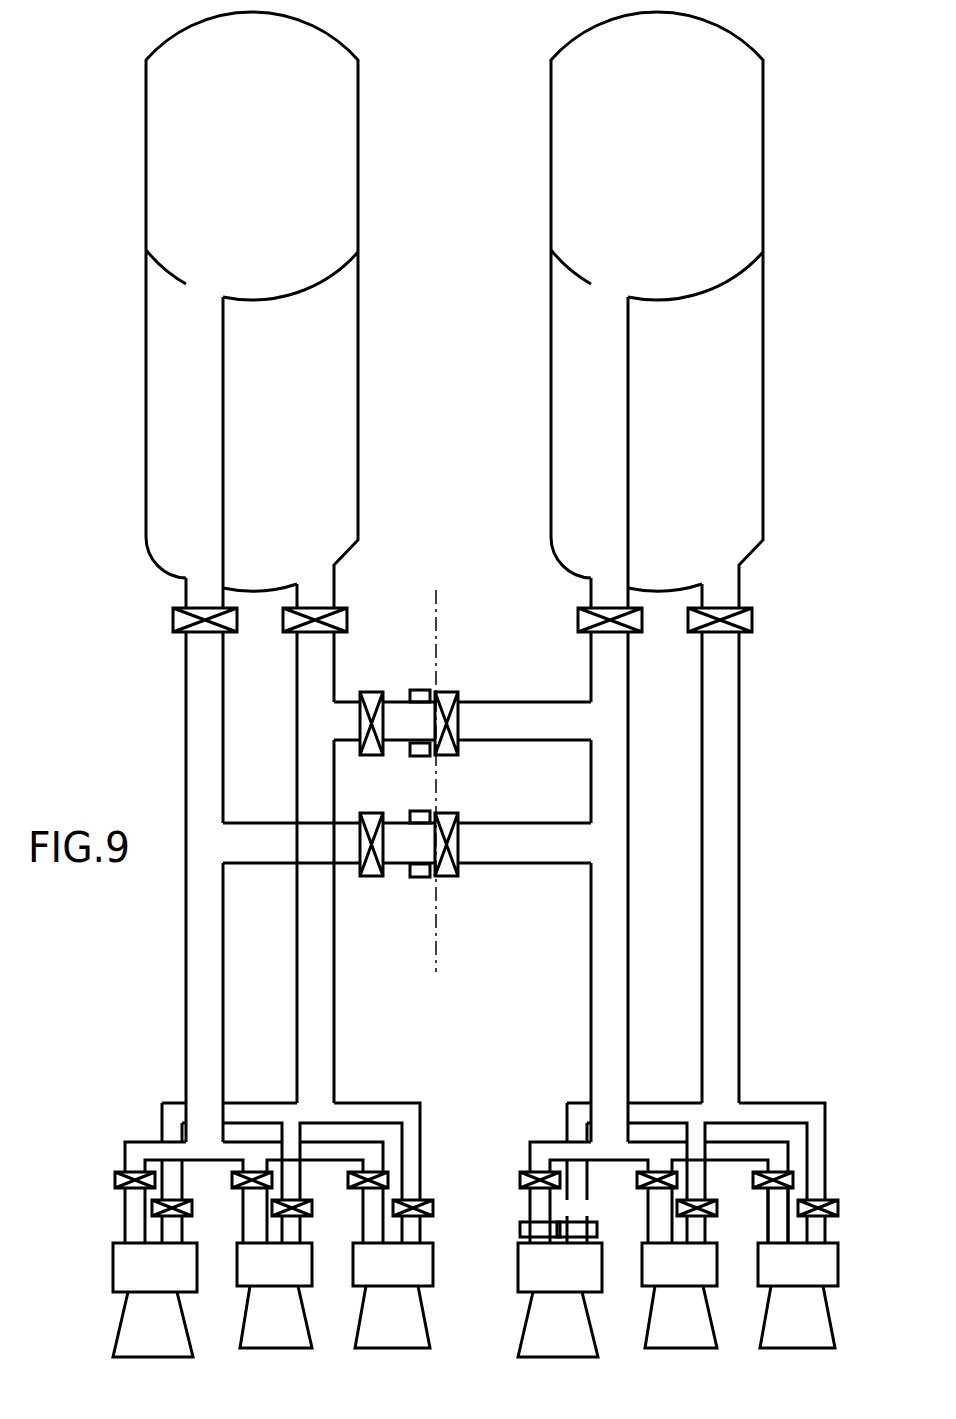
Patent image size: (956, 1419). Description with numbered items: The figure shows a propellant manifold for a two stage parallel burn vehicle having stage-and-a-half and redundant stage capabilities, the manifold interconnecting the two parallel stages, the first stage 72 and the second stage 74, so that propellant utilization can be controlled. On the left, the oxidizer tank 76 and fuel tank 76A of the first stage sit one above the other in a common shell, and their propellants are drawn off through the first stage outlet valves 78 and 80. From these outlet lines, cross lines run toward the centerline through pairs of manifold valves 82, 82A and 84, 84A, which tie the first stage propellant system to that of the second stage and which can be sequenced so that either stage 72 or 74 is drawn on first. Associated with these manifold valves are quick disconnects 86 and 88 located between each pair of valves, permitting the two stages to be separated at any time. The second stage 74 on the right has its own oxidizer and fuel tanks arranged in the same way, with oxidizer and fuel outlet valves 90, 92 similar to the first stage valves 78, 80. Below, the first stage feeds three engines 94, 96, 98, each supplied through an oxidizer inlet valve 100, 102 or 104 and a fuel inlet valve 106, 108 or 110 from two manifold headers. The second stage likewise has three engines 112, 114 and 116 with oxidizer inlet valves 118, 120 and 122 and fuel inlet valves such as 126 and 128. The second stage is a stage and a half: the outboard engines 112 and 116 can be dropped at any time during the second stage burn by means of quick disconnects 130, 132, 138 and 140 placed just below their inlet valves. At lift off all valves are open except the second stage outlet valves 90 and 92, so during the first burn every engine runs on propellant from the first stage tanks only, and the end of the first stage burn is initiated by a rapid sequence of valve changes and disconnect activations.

The stage 1 72 is at (220, 310).
The stage 2 74 is at (764, 188).
The oxidizer tank 76 is at (146, 193).
The fuel tank 76A is at (146, 400).
The stage 1 outlet valve 78 is at (175, 610).
The stage 1 outlet valve 80 is at (347, 607).
The manifold valve 82 is at (368, 692).
The manifold valve 82A is at (458, 698).
The manifold valve 84 is at (368, 813).
The manifold valve 84A is at (458, 815).
The quick disconnect 86 is at (427, 690).
The quick disconnect 88 is at (432, 813).
The oxidizer outlet valve 90 is at (580, 610).
The fuel outlet valve 92 is at (752, 607).
The engine 94 is at (142, 1337).
The engine 96 is at (253, 1337).
The engine 98 is at (373, 1337).
The oxidizer inlet valve 100 is at (115, 1180).
The oxidizer inlet valve 102 is at (233, 1177).
The oxidizer inlet valve 104 is at (350, 1178).
The fuel inlet valve 106 is at (150, 1202).
The fuel inlet valve 108 is at (307, 1200).
The fuel inlet valve 110 is at (436, 1207).
The engine 112 is at (584, 1337).
The engine 114 is at (655, 1337).
The engine 116 is at (818, 1295).
The oxidizer inlet valve 118 is at (519, 1180).
The oxidizer inlet valve 120 is at (657, 1172).
The oxidizer inlet valve 122 is at (797, 1172).
The fuel inlet valve 126 is at (715, 1198).
The fuel inlet valve 128 is at (838, 1205).
The quick disconnect 130 is at (521, 1234).
The quick disconnect 132 is at (596, 1238).
The quick disconnect 138 is at (766, 1226).
The quick disconnect 140 is at (830, 1266).